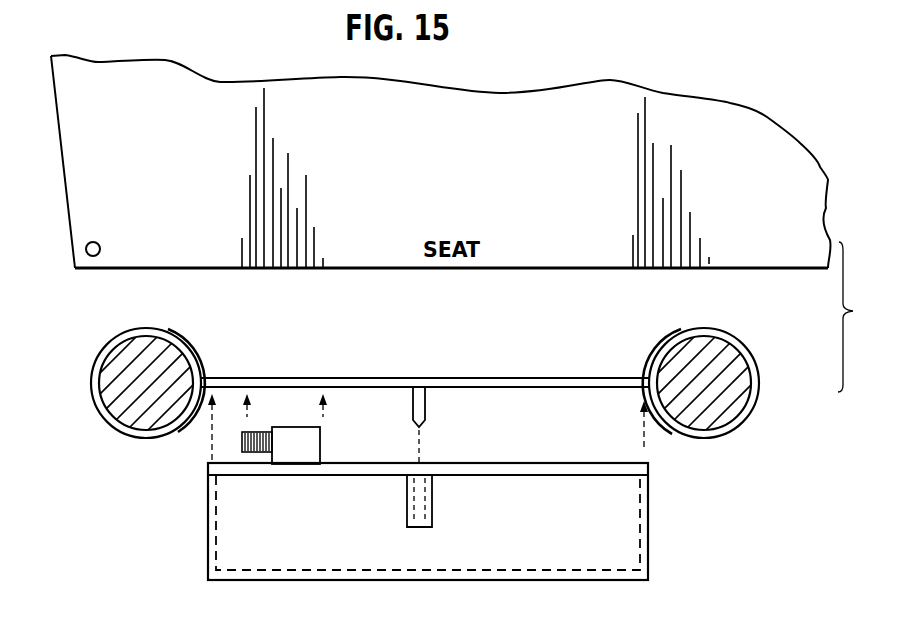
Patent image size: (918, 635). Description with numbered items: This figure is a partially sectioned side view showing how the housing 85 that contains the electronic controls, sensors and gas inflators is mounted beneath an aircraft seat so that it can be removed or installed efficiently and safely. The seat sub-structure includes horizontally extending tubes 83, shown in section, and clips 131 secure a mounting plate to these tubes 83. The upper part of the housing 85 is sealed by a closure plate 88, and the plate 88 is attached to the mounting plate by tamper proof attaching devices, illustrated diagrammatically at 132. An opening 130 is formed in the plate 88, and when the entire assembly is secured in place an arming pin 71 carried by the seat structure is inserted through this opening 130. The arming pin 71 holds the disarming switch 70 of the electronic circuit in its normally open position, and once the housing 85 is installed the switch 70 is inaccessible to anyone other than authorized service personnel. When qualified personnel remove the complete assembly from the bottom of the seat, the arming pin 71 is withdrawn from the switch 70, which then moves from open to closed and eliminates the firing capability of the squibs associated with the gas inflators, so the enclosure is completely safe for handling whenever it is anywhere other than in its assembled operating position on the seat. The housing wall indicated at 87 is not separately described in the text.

The disarming switch 70 is at (442, 499).
The arming pin 71 is at (400, 402).
The horizontally extending tubes 83 is at (733, 342).
The housing 85 is at (655, 512).
The housing side wall 87 is at (207, 512).
The closure plate 88 is at (581, 462).
The opening 130 is at (434, 458).
The clips 131 is at (196, 346).
The tamper proof attaching devices 132 is at (214, 425).